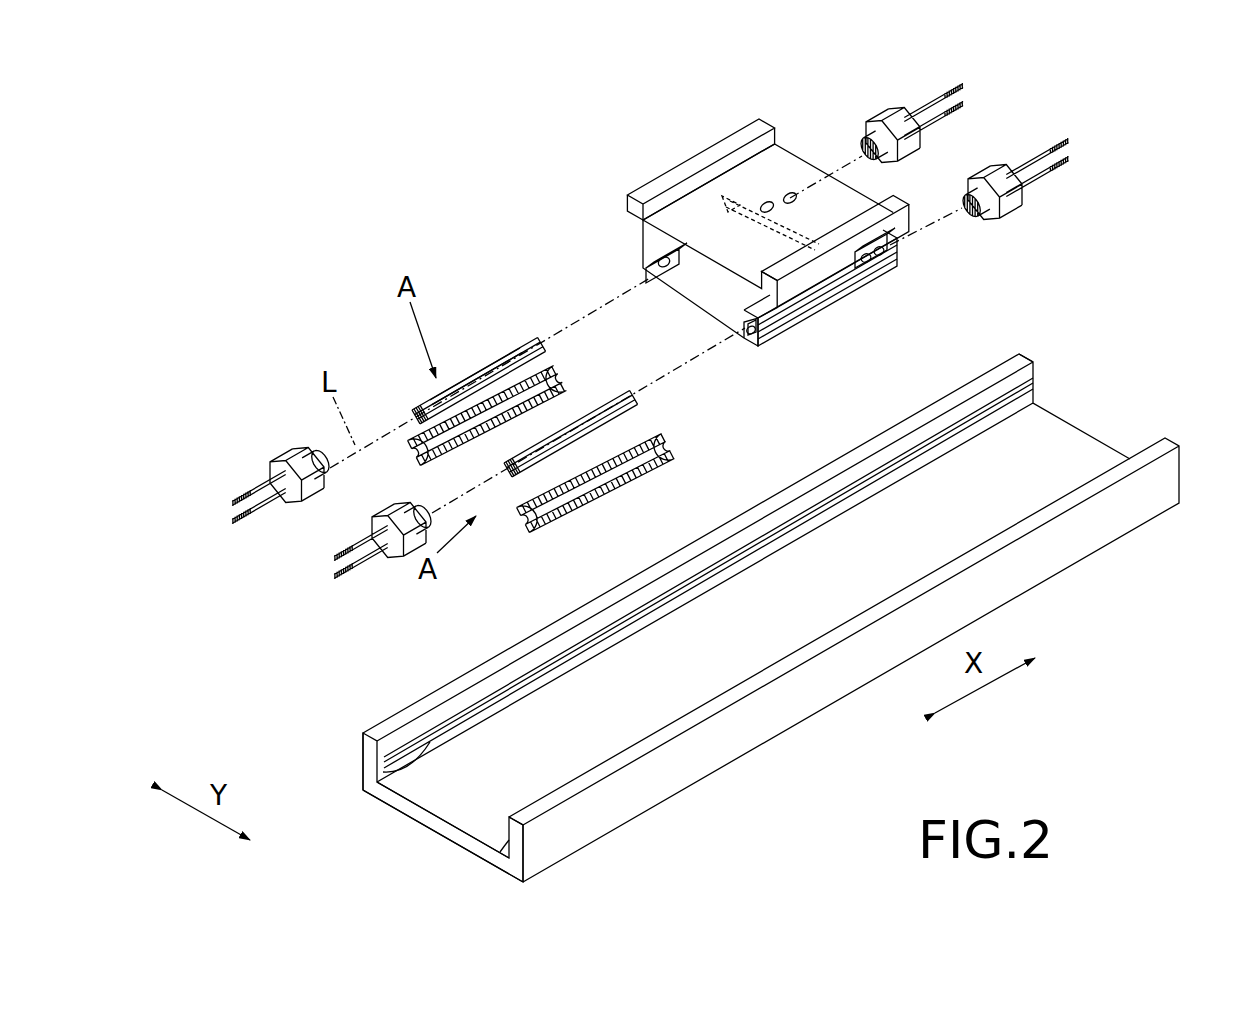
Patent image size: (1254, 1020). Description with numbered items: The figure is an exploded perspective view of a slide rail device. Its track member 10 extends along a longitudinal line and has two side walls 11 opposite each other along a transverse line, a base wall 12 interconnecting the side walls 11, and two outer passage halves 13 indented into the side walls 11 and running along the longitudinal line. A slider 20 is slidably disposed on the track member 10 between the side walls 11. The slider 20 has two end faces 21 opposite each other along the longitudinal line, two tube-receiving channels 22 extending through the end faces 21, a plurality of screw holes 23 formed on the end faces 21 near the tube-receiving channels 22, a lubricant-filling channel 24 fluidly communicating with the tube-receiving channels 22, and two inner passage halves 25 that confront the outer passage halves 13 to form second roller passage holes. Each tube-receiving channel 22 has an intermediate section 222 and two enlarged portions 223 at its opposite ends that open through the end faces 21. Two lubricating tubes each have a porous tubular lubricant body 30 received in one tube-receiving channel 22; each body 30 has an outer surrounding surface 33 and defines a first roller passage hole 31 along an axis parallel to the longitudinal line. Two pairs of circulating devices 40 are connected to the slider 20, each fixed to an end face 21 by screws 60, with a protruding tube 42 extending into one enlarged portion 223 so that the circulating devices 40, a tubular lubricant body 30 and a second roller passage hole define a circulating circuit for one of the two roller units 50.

The track member 10 is at (693, 787).
The side walls 11 is at (362, 740).
The base wall 12 is at (422, 814).
The outer passage halves 13 is at (378, 784).
The slider 20 is at (698, 160).
The end faces 21 is at (632, 213).
The tube-receiving channels 22 is at (658, 284).
The screw holes 23 is at (648, 252).
The lubricant-filling channel 24 is at (880, 270).
The inner passage halves 25 is at (812, 300).
The tubular lubricant body 30 is at (463, 376).
The first roller passage hole 31 is at (410, 414).
The outer surrounding surface 33 is at (500, 356).
The circulating devices 40 is at (291, 445).
The protruding tube 42 is at (868, 136).
The roller units 50 is at (402, 470).
The screws 60 is at (233, 522).
The intermediate section 222 is at (706, 243).
The enlarged portions 223 is at (665, 255).